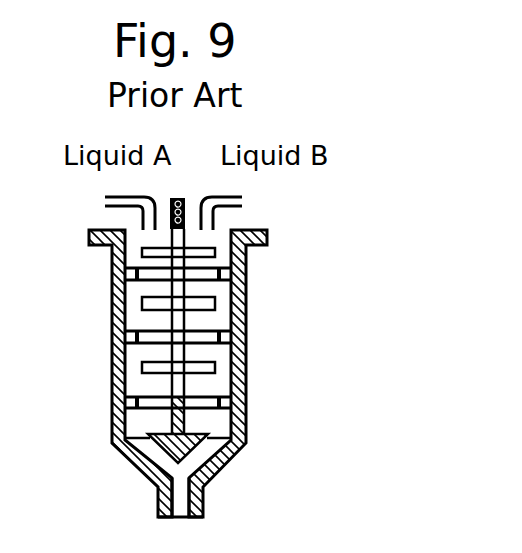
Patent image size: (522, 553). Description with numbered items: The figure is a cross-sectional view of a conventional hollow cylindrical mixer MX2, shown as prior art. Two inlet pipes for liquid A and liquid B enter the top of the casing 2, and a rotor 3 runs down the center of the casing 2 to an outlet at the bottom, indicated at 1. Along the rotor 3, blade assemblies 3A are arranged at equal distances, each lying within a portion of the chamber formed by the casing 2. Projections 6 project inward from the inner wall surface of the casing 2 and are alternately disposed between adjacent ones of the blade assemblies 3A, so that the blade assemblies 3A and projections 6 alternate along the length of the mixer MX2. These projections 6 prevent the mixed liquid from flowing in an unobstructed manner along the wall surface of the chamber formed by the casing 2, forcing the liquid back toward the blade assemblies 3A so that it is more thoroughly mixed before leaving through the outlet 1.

The hollow cylindrical mixer MX2 is at (313, 225).
The casing 2 is at (245, 298).
The rotor 3 is at (192, 350).
The blade assemblies 3A is at (202, 368).
The projections 6 is at (222, 415).
The outlet nozzle 1 is at (204, 497).